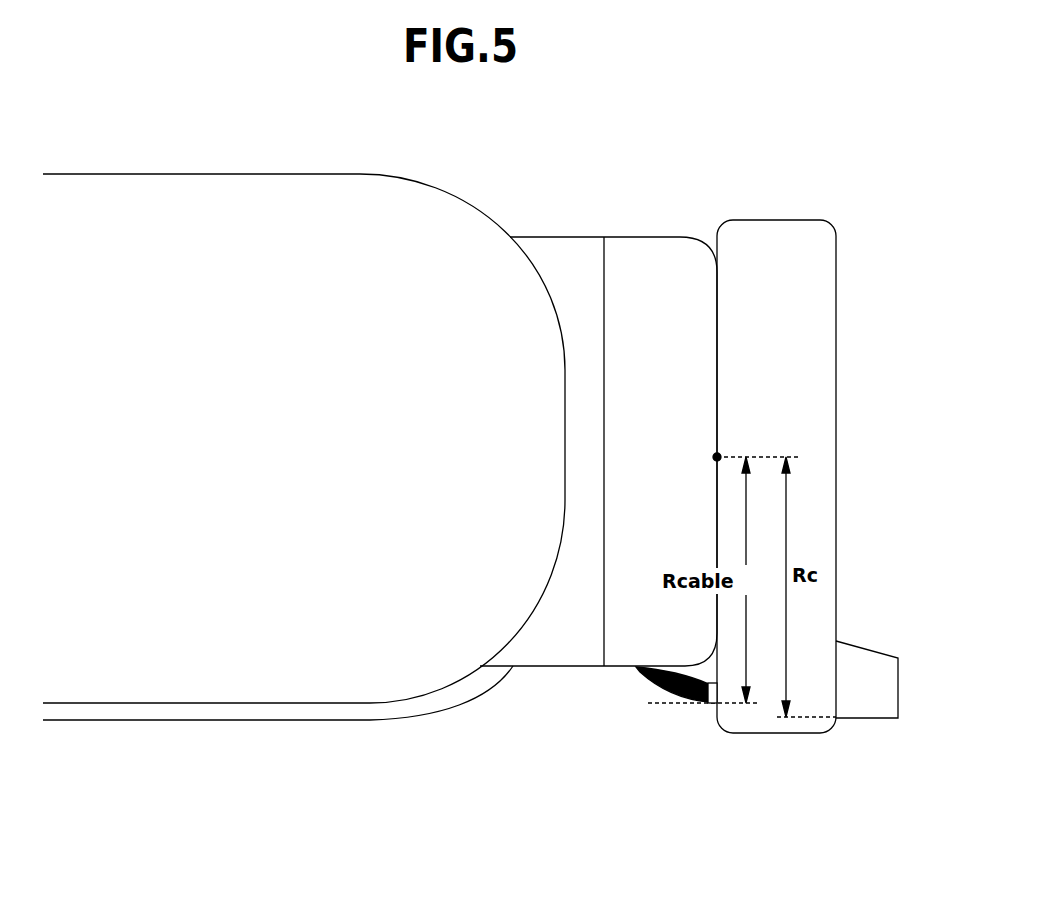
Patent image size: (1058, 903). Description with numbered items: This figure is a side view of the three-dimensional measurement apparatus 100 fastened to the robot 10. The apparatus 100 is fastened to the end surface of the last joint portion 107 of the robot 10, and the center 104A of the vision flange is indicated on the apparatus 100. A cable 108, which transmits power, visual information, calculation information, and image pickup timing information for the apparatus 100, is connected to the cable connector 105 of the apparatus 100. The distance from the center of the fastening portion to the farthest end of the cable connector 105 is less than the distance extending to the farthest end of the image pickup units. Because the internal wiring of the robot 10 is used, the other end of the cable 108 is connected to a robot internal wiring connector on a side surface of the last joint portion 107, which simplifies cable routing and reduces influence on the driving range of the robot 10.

The robot 10 is at (242, 192).
The last joint portion 107 is at (643, 237).
The three-dimensional measurement apparatus 100 is at (777, 220).
The center of the vision flange 104A is at (717, 457).
The cable 108 is at (653, 686).
The cable connector 105 is at (710, 708).